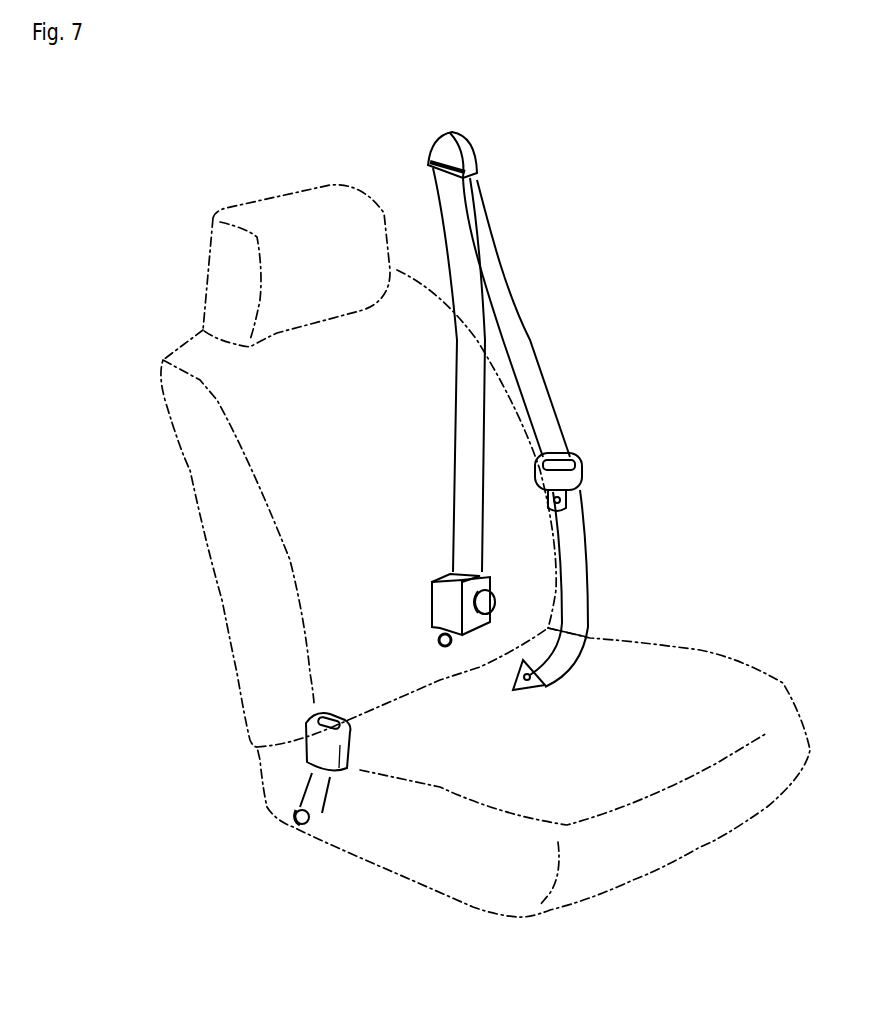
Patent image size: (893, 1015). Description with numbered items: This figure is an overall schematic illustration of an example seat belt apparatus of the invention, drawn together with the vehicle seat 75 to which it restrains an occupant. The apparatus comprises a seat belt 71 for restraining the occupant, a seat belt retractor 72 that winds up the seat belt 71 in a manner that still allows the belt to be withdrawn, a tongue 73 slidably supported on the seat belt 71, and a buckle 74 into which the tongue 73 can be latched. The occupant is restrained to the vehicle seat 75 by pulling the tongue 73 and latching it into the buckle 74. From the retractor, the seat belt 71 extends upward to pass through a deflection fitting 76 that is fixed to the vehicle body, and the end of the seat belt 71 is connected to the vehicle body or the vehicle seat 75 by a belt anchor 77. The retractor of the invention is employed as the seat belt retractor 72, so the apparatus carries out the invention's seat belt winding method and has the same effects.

The seat belt 71 is at (497, 285).
The seat belt retractor 72 is at (447, 607).
The tongue 73 is at (572, 475).
The buckle 74 is at (322, 747).
The vehicle seat 75 is at (312, 513).
The deflection fitting 76 is at (443, 150).
The belt anchor 77 is at (522, 688).